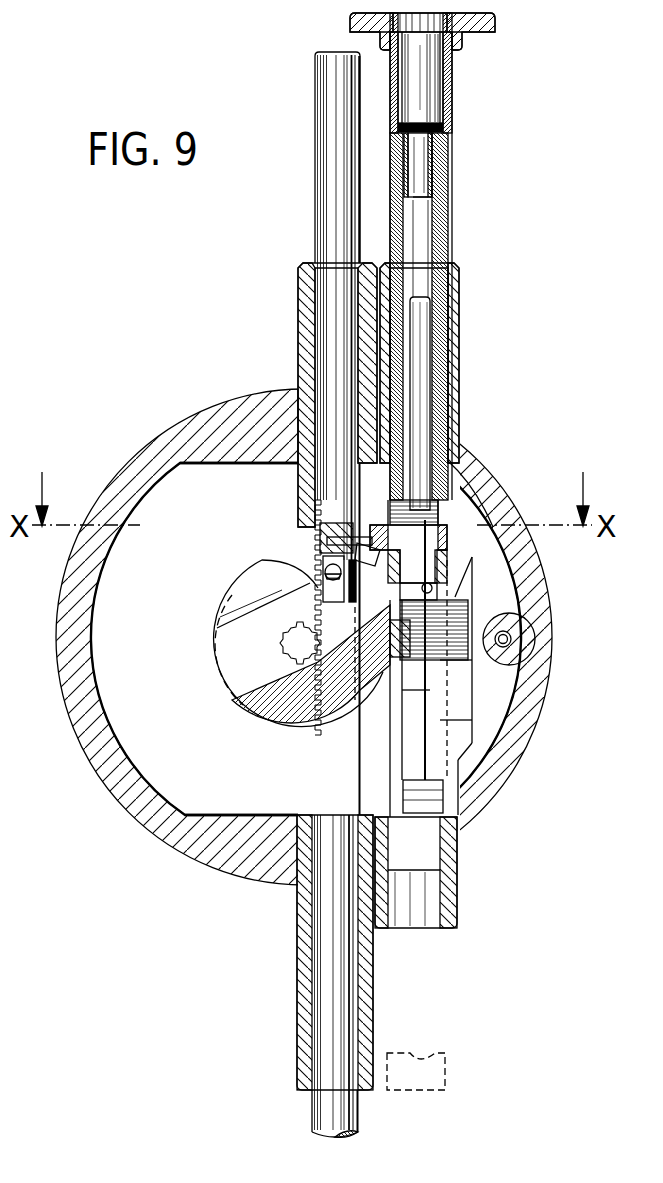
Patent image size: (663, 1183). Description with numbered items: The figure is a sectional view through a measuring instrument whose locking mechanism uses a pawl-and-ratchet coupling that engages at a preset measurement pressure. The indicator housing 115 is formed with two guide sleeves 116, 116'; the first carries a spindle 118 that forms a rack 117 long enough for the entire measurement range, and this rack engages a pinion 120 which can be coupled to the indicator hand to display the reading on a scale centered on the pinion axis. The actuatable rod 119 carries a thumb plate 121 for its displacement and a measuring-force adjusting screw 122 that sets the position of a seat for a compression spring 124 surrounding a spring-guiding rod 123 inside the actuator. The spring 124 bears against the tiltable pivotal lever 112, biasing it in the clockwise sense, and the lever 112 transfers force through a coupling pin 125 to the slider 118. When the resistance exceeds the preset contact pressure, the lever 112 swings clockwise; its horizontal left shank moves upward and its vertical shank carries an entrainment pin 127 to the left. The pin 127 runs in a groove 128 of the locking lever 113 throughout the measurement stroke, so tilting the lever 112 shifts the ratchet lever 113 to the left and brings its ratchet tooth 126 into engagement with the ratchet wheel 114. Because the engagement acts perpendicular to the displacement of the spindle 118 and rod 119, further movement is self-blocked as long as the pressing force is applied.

The pivotal lever 112 is at (480, 512).
The locking lever 113 is at (460, 730).
The ratchet wheel 114 is at (227, 610).
The indicator housing 115 is at (148, 810).
The guide sleeve 116 is at (307, 571).
The guide sleeve 116' is at (447, 574).
The rack 117 is at (302, 443).
The spindle 118 is at (320, 1112).
The actuatable rod 119 is at (452, 107).
The pinion 120 is at (289, 640).
The thumb plate 121 is at (480, 23).
The measuring-force adjusting screw 122 is at (432, 165).
The spring-guiding rod 123 is at (420, 330).
The compression spring 124 is at (440, 395).
The coupling pin 125 is at (320, 515).
The ratchet tooth 126 is at (390, 647).
The entrainment pin 127 is at (430, 590).
The groove 128 is at (450, 777).